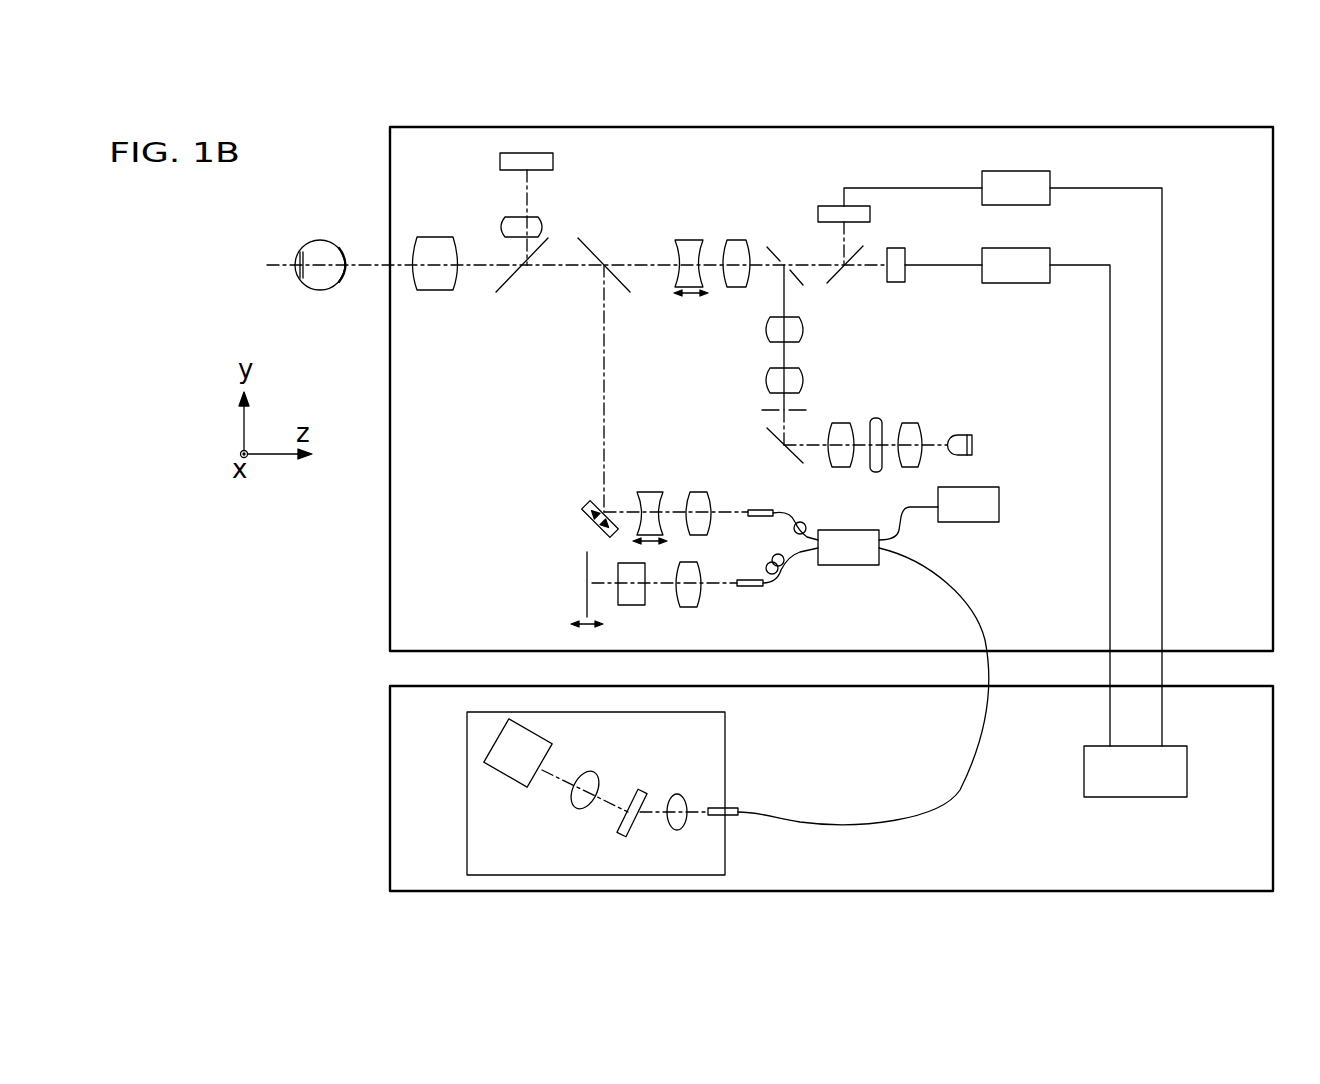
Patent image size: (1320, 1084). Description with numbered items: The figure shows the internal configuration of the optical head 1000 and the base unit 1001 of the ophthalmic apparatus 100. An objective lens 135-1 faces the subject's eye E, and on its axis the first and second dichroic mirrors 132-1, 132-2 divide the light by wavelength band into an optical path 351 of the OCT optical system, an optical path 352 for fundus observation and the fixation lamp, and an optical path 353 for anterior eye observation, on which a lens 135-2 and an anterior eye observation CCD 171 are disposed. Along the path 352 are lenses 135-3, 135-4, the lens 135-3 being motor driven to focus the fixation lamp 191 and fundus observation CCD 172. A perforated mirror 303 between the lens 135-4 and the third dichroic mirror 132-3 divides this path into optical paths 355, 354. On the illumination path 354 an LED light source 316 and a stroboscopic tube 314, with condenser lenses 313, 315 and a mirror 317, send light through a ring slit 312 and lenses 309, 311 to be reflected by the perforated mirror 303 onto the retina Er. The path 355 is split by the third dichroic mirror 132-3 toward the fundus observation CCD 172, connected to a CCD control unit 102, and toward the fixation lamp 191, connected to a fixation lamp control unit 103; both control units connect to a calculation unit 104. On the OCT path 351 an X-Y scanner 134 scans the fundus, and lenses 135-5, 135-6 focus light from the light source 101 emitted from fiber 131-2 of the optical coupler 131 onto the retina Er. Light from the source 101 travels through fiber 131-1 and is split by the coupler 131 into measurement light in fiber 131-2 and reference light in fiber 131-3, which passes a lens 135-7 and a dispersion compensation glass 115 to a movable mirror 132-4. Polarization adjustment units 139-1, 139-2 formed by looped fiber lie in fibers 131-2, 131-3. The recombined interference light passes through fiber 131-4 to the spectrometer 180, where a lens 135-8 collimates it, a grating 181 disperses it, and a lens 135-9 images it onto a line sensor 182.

The optical head 1000 is at (389, 150).
The base unit 1001 is at (389, 742).
The ophthalmic imaging apparatus 100 is at (358, 535).
The subject's eye E is at (314, 240).
The retina Er is at (300, 278).
The objective lens 135-1 is at (438, 290).
The anterior eye observation CCD 171 is at (500, 160).
The optical path for observation of the anterior eye portion 353 is at (528, 200).
The lens 135-2 is at (508, 220).
The first dichroic mirror 132-1 is at (530, 298).
The second dichroic mirror 132-2 is at (598, 233).
The optical path for fundus observation and for a fixation lamp 352 is at (650, 275).
The optical path of the OCT optical system 351 is at (603, 378).
The lens 135-3 is at (684, 240).
The lens 135-4 is at (737, 240).
The optical path 355 is at (812, 264).
The perforated mirror 303 is at (767, 280).
The optical path 354 is at (786, 295).
The fundus observation CCD 172 is at (832, 206).
The third dichroic mirror 132-3 is at (863, 250).
The fixation lamp 191 is at (897, 282).
The CCD control unit 102 is at (1020, 176).
The fixation lamp control unit 103 is at (1014, 278).
The lens 309 is at (805, 330).
The lens 311 is at (766, 368).
The ring slit 312 is at (768, 410).
The mirror 317 is at (769, 437).
The condenser lens 313 is at (842, 423).
The stroboscopic tube 314 is at (878, 418).
The condenser lens 315 is at (916, 423).
The LED light source 316 is at (973, 445).
The X-Y scanner 134 is at (586, 506).
The lens 135-5 is at (655, 477).
The lens 135-6 is at (698, 496).
The optical coupler 131 is at (880, 545).
The optical fiber 131-1 is at (896, 516).
The optical fiber 131-2 is at (790, 498).
The optical fiber 131-3 is at (798, 555).
The optical fiber 131-4 is at (930, 568).
The polarization adjustment unit 139-1 is at (805, 526).
The polarization adjustment unit 139-2 is at (766, 560).
The light source 101 is at (1000, 504).
The mirror 132-4 is at (585, 566).
The dispersion compensation glass 115 is at (628, 595).
The lens 135-7 is at (686, 605).
The spectrometer 180 is at (466, 748).
The line sensor 182 is at (546, 740).
The grating 181 is at (634, 790).
The lens 135-9 is at (580, 806).
The lens 135-8 is at (678, 830).
The calculation unit 104 is at (1188, 773).